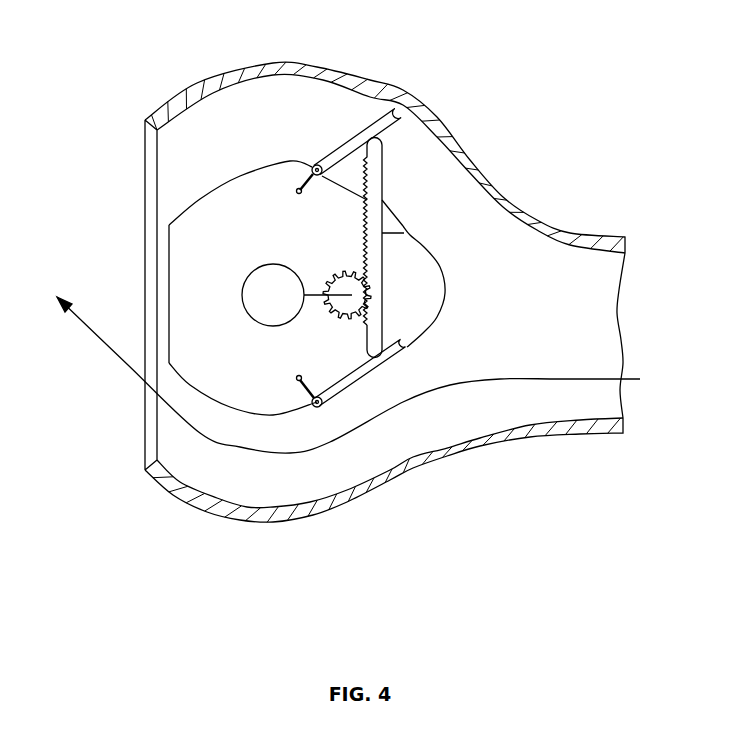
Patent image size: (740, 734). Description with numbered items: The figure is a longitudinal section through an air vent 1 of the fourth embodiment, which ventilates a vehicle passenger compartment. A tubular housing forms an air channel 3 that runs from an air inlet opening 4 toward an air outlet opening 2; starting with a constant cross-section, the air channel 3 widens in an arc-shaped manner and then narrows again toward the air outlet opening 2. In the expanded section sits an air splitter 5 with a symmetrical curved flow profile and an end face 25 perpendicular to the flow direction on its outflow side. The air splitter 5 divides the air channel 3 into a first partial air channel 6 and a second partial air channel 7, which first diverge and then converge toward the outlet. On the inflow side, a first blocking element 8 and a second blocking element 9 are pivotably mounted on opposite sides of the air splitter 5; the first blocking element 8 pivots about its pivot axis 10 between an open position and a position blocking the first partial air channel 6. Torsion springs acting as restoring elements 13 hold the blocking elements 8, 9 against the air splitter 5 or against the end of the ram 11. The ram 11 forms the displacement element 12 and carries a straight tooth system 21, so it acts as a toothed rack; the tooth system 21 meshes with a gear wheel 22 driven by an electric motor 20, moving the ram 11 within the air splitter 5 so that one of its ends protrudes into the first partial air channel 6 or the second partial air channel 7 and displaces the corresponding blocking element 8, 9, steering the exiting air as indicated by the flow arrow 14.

The air vent 1 is at (516, 115).
The air outlet opening 2 is at (96, 214).
The air channel 3 is at (357, 500).
The air inlet opening 4 is at (622, 330).
The air splitter 5 is at (237, 393).
The first partial air channel 6 is at (273, 105).
The second partial air channel 7 is at (307, 477).
The first blocking element 8 is at (398, 118).
The second blocking element 9 is at (380, 370).
The pivot axis 10 is at (322, 165).
The ram 11 is at (373, 332).
The displacement element 12 is at (374, 248).
The restoring element 13 is at (299, 185).
The flow arrow 14 is at (103, 350).
The electric motor 20 is at (242, 296).
The tooth system 21 is at (366, 245).
The gear wheel 22 is at (343, 322).
The end face 25 is at (170, 302).